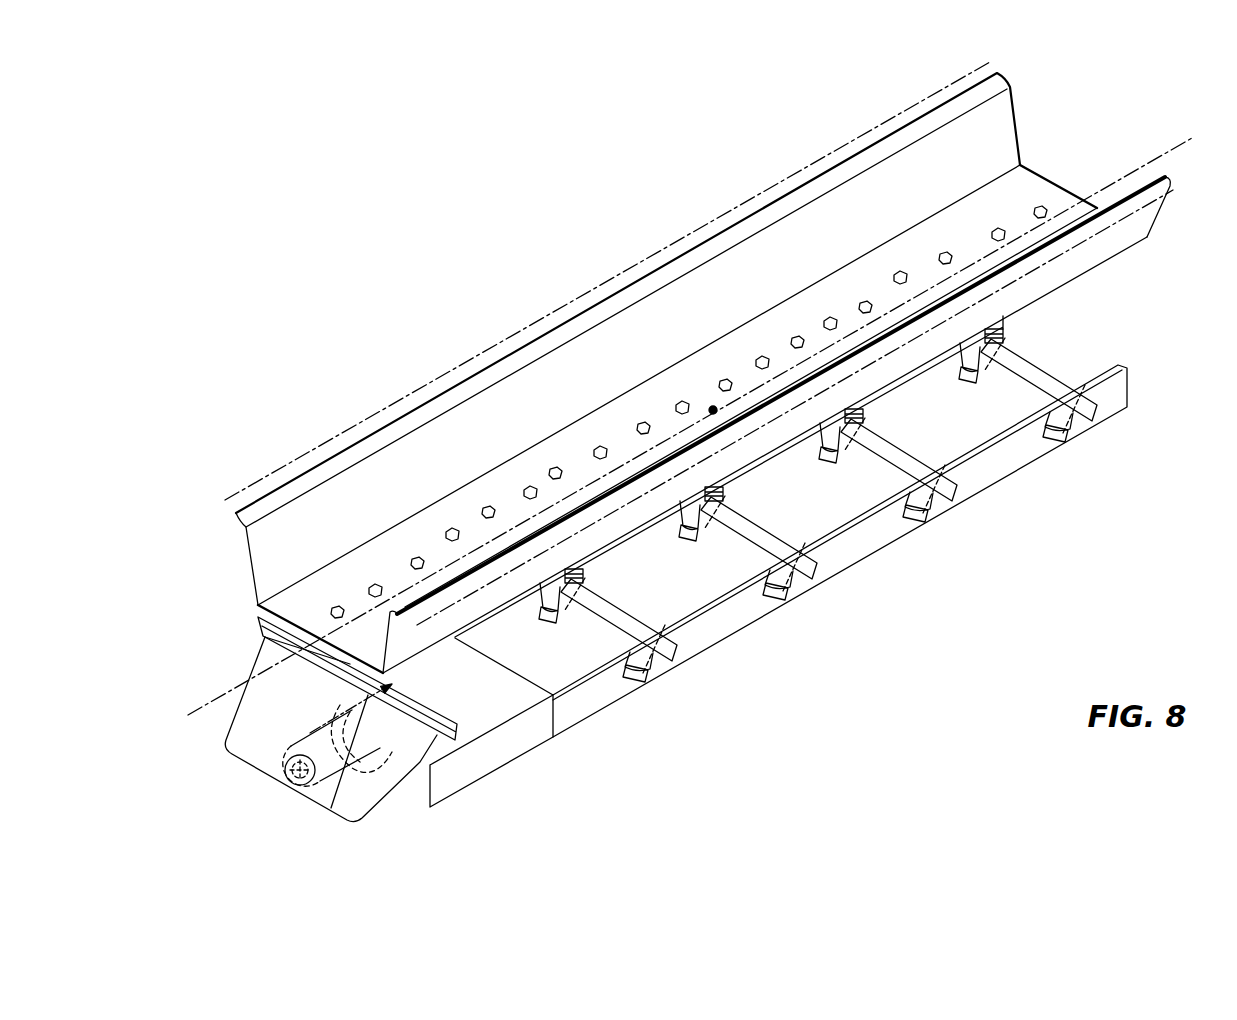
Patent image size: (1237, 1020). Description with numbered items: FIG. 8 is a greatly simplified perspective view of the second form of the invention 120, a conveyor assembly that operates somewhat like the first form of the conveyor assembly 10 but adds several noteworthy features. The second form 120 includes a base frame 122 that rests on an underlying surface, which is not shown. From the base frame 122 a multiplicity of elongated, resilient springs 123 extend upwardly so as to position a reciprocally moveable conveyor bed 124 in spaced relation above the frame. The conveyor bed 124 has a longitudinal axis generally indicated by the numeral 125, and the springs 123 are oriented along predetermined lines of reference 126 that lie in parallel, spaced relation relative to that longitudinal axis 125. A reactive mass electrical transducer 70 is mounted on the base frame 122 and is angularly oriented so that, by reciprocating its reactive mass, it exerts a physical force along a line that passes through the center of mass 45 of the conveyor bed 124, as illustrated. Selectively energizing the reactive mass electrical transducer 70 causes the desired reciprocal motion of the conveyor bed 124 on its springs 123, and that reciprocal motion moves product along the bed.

The vibratory conveyor 10 is at (496, 188).
The center of mass 45 is at (711, 405).
The reactive mass electrical transducer 70 is at (356, 774).
The second form of the invention 120 is at (1037, 196).
The base frame 122 is at (1077, 442).
The elongated, resilient springs 123 is at (828, 539).
The reciprocally moveable conveyor bed 124 is at (972, 190).
The longitudinal axis 125 is at (1150, 162).
The predetermined lines of reference 126 is at (690, 214).